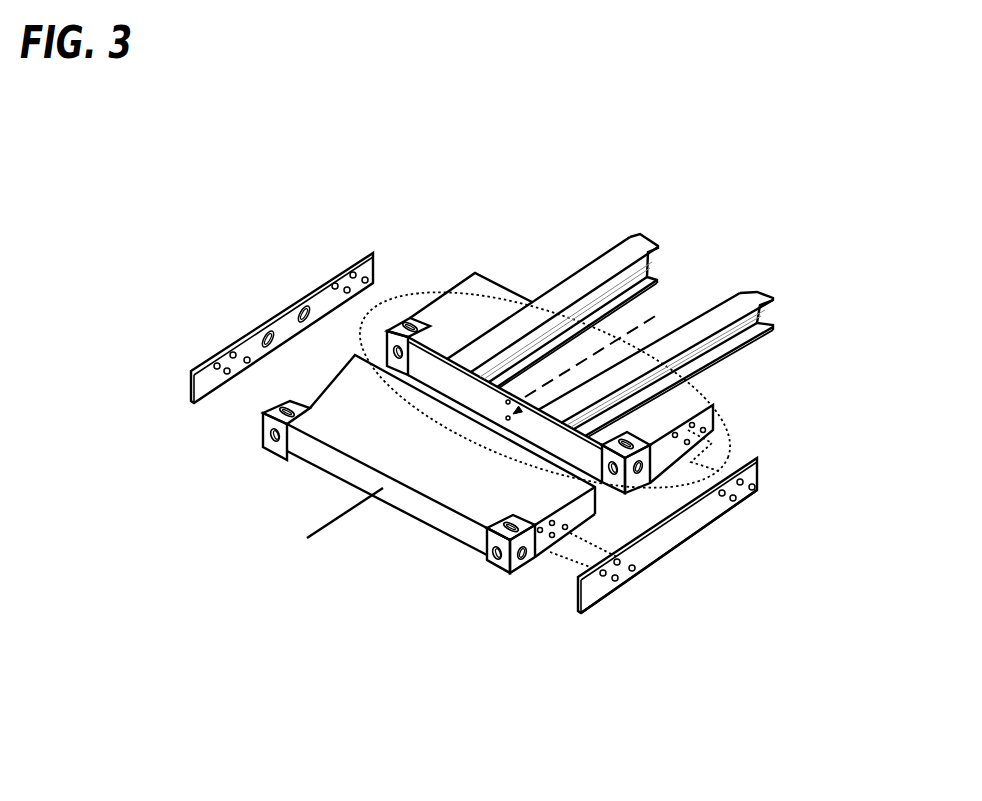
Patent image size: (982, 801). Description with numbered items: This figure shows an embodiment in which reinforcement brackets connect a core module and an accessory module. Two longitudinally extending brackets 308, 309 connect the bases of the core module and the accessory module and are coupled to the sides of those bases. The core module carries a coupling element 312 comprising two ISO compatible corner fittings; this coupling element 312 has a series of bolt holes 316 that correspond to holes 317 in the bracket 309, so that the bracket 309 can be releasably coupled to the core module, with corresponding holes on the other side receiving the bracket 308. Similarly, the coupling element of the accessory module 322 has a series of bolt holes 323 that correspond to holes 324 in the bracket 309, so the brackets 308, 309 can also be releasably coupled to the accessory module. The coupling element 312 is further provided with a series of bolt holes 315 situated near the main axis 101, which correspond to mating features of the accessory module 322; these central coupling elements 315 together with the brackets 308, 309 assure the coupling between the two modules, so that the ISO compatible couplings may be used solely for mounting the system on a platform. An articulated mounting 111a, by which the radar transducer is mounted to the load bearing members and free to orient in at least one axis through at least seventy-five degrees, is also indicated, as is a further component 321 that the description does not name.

The main axis 101 is at (332, 528).
The articulated mounting 111a is at (697, 325).
The bracket 308 is at (192, 403).
The bracket 309 is at (578, 613).
The coupling element 312 is at (372, 307).
The bolt holes 315 is at (600, 338).
The bolt holes 316 is at (716, 438).
The holes 317 is at (745, 497).
The front bar 321 is at (330, 477).
The coupling element of the accessory module 322 is at (342, 358).
The bolt holes 323 is at (548, 540).
The holes 324 is at (622, 573).